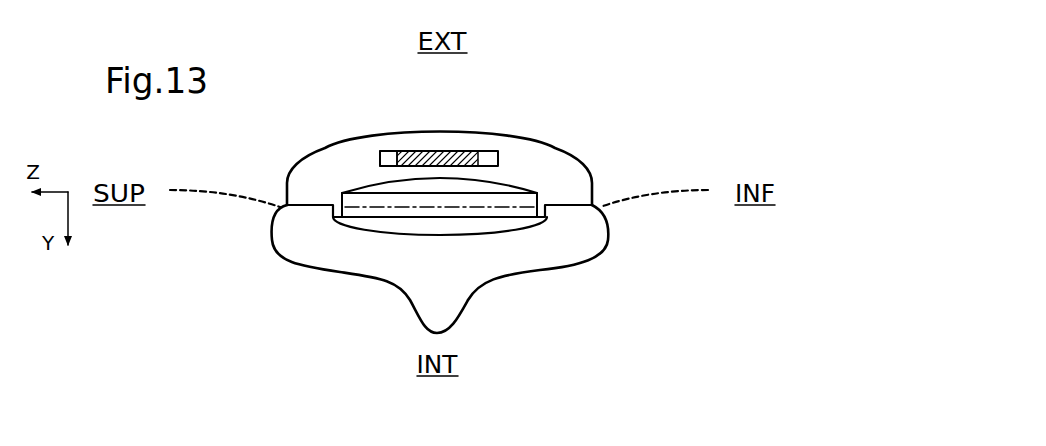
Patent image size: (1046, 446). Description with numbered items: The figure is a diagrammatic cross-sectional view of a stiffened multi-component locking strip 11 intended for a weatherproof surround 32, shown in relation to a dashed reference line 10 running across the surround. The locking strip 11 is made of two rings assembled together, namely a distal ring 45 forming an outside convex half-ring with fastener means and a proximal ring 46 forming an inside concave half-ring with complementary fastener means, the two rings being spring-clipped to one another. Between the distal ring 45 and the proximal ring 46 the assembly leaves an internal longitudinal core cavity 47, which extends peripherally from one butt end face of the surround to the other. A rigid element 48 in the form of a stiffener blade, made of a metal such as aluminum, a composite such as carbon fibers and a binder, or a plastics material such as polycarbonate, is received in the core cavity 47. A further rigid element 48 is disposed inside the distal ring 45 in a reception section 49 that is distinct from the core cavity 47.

The spectacle frame / reference line 10 is at (662, 190).
The locking strip 11 is at (607, 75).
The weatherproof surround 32 is at (721, 60).
The distal ring 45 is at (343, 153).
The proximal ring 46 is at (318, 255).
The core cavity 47 is at (450, 187).
The rigid element 48 is at (435, 162).
The reception section 49 is at (389, 157).